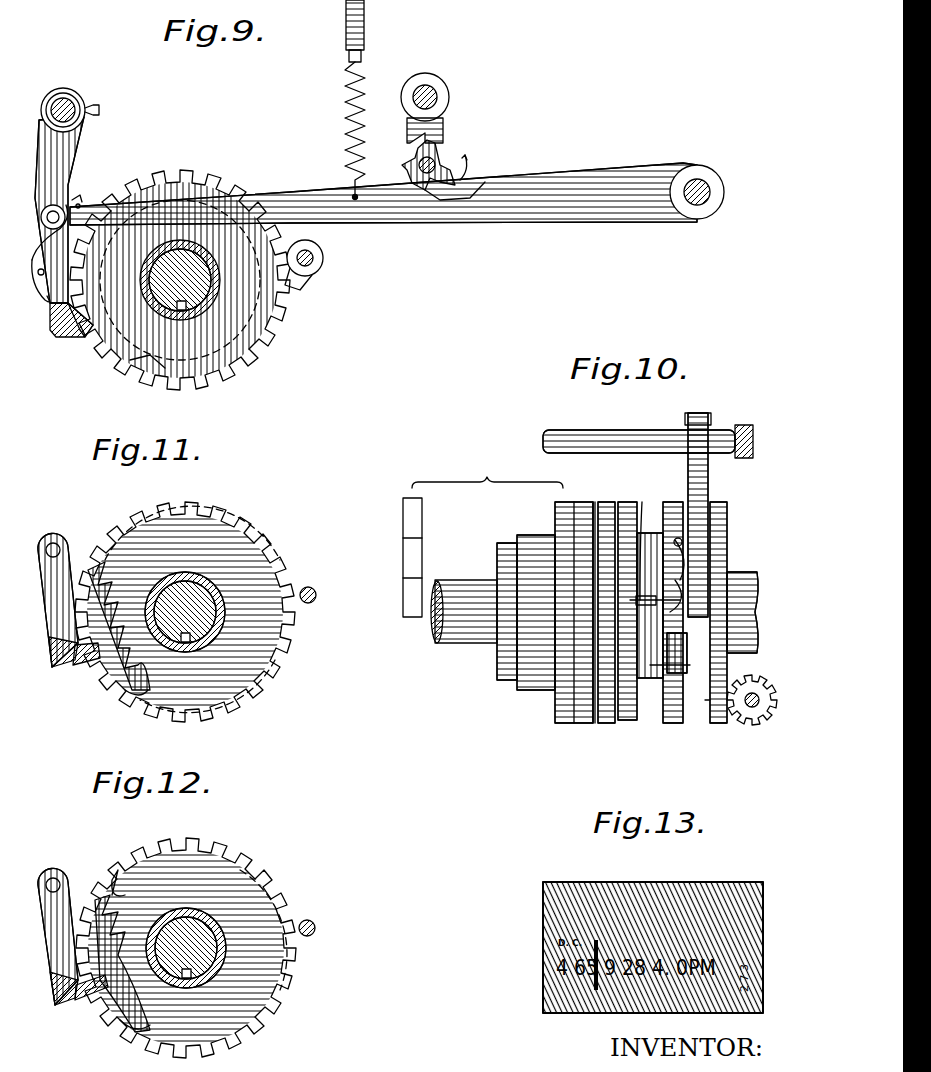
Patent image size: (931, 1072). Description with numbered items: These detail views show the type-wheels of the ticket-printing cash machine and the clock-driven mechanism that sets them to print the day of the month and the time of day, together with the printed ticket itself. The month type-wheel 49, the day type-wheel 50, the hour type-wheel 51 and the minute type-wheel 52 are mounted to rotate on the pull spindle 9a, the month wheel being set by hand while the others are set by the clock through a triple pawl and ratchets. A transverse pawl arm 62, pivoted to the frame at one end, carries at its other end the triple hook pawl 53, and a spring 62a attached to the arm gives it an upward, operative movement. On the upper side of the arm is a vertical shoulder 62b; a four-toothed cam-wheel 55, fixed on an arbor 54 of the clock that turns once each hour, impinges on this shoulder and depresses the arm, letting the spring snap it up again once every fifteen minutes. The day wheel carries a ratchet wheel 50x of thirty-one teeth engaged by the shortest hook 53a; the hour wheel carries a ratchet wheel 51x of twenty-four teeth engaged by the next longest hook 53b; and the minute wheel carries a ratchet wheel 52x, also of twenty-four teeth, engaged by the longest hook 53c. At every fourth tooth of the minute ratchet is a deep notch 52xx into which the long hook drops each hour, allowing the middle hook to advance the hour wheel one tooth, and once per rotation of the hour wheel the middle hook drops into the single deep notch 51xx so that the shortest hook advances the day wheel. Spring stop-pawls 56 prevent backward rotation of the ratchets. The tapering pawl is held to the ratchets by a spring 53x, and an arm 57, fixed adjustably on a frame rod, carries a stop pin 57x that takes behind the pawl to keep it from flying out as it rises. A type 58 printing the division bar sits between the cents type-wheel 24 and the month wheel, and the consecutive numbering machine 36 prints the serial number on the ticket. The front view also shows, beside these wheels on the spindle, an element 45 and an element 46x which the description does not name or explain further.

In FIG. 9, the pull spindle 9a is at (180, 280).
In FIG. 10, the pull spindle 9a is at (770, 574).
In FIG. 11, the pull spindle 9a is at (185, 612).
In FIG. 12, the pull spindle 9a is at (186, 948).
In FIG. 10, the cents type-wheel 24 is at (583, 706).
In FIG. 10, the consecutive numbering machine 36 is at (771, 700).
In FIG. 10, the indicator wheel 45 is at (422, 555).
In FIG. 10, the drum hub 46x is at (503, 680).
In FIG. 10, the month type-wheel 49 is at (606, 720).
In FIG. 9, the day type-wheel 50 is at (236, 342).
In FIG. 10, the day type-wheel 50 is at (640, 700).
In FIG. 9, the ratchet wheel 50x is at (140, 362).
In FIG. 10, the ratchet wheel 50x is at (640, 680).
In FIG. 10, the hour type-wheel 51 is at (673, 715).
In FIG. 11, the hour type-wheel 51 is at (268, 672).
In FIG. 10, the ratchet wheel 51x is at (690, 672).
In FIG. 11, the ratchet wheel 51x is at (128, 688).
In FIG. 11, the deep notch 51xx is at (119, 626).
In FIG. 10, the minute type-wheel 52 is at (716, 720).
In FIG. 12, the minute type-wheel 52 is at (280, 980).
In FIG. 10, the ratchet wheel 52x is at (690, 705).
In FIG. 12, the ratchet wheel 52x is at (135, 1025).
In FIG. 12, the deep notch 52xx is at (112, 893).
In FIG. 9, the triple hook pawl 53 is at (50, 310).
In FIG. 10, the triple hook pawl 53 is at (623, 502).
In FIG. 11, the triple hook pawl 53 is at (48, 618).
In FIG. 12, the triple hook pawl 53 is at (48, 955).
In FIG. 9, the shortest hook 53a is at (78, 333).
In FIG. 11, the next longest hook 53b is at (88, 662).
In FIG. 12, the longest hook 53c is at (85, 995).
In FIG. 9, the spring 53x is at (44, 226).
In FIG. 10, the spring 53x is at (690, 565).
In FIG. 9, the arbor 54 is at (437, 162).
In FIG. 9, the four-toothed cam-wheel 55 is at (412, 157).
In FIG. 9, the spring stop-pawl 56 is at (303, 276).
In FIG. 9, the arm 57 is at (74, 152).
In FIG. 10, the arm 57 is at (708, 482).
In FIG. 9, the stop pin 57x is at (36, 270).
In FIG. 10, the stop pin 57x is at (700, 612).
In FIG. 9, the type 58 is at (172, 378).
In FIG. 10, the type 58 is at (594, 720).
In FIG. 9, the pawl arm 62 is at (530, 215).
In FIG. 10, the pawl arm 62 is at (650, 520).
In FIG. 9, the spring 62a is at (344, 112).
In FIG. 9, the vertical shoulder 62b is at (425, 192).